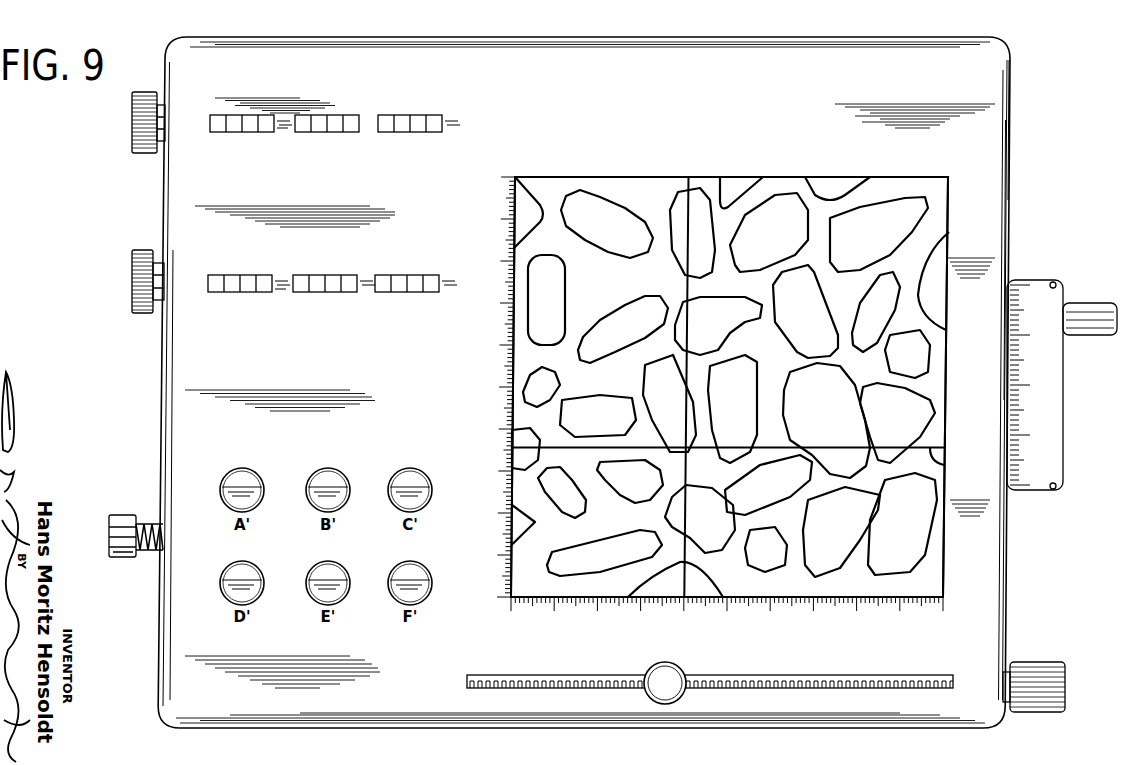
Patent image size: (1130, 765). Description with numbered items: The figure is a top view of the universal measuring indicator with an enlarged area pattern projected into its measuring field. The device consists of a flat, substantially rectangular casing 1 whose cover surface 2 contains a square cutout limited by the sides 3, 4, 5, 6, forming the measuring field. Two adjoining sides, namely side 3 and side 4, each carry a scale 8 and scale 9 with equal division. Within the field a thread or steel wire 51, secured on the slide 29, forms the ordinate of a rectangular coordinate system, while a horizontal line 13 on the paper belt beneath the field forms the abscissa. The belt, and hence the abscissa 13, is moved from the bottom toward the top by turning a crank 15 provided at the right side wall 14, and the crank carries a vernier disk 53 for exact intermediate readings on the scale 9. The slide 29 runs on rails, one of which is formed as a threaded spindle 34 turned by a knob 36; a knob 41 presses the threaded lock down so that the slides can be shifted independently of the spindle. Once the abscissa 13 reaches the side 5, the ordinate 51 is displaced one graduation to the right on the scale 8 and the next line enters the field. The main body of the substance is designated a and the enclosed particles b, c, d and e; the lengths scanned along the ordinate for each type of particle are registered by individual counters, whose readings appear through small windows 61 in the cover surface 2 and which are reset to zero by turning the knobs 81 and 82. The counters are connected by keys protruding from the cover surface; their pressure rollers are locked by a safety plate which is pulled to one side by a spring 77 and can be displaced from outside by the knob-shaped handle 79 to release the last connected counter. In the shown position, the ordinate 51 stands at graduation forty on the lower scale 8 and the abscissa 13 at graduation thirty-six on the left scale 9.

The casing 1 is at (1012, 108).
The right side wall 14 is at (1008, 222).
The cover surface 2 is at (653, 126).
The side of the measuring field 5 is at (780, 177).
The side of the measuring field 4 is at (518, 258).
The steel wire 51 is at (687, 284).
The side of the measuring field 6 is at (946, 362).
The horizontal line 13 is at (908, 445).
The scale 9 is at (511, 393).
The side of the measuring field 3 is at (756, 593).
The scale 8 is at (800, 605).
The threaded spindle 34 is at (588, 677).
The slide 29 is at (719, 662).
The knob 41 is at (660, 690).
The knob 36 is at (1058, 652).
The vernier disk 53 is at (1050, 433).
The crank 15 is at (1092, 312).
The small windows 61 is at (385, 277).
The knob 81 is at (132, 128).
The knob 82 is at (140, 283).
The knob-shaped handle 79 is at (126, 520).
The spring 77 is at (150, 552).